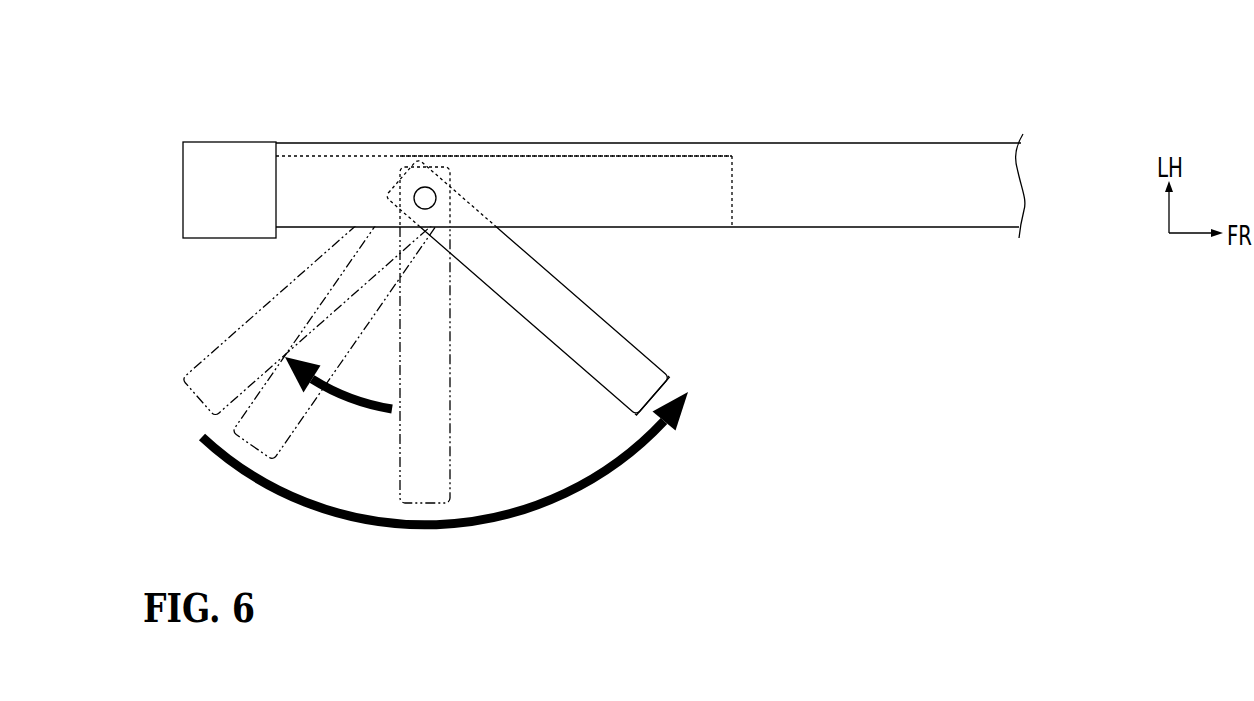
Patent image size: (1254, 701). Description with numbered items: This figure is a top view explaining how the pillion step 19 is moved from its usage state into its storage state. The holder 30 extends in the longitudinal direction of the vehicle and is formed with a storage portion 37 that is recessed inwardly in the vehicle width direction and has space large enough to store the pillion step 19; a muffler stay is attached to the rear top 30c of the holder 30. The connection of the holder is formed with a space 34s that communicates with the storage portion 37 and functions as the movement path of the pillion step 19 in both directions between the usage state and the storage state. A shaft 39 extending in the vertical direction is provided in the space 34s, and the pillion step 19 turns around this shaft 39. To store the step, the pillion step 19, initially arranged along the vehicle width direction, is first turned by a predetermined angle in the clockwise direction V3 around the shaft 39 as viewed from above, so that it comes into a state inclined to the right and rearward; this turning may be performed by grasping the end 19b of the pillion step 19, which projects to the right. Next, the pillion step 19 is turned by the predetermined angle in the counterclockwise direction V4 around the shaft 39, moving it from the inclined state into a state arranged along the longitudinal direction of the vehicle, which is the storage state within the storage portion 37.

The holder 30 is at (877, 136).
The rear top of the holder 30c is at (221, 142).
The space 34s is at (321, 180).
The storage portion 37 is at (601, 203).
The shaft 39 is at (428, 197).
The pillion step 19 is at (598, 330).
The end of the pillion step 19b is at (662, 378).
The clockwise direction V3 is at (355, 408).
The counterclockwise direction V4 is at (583, 497).